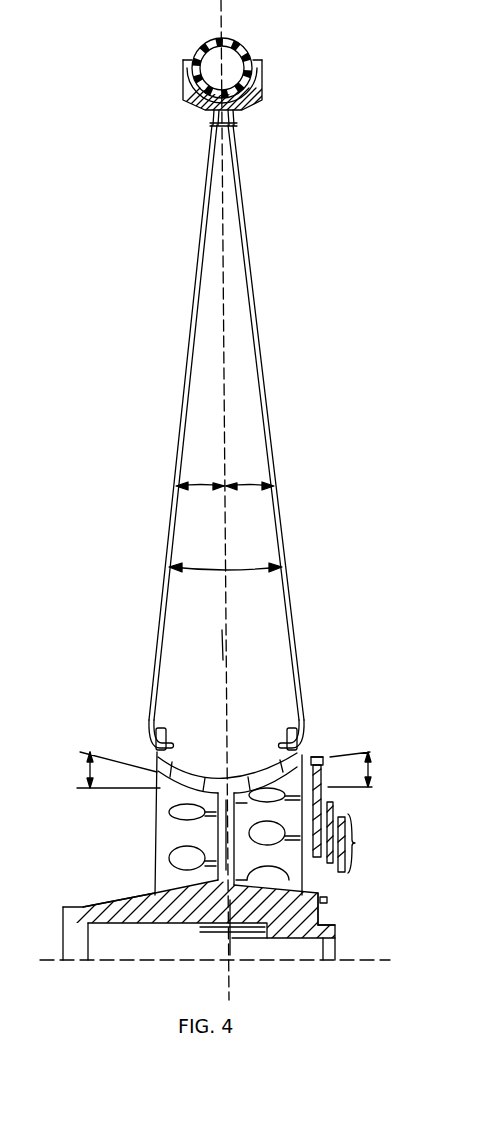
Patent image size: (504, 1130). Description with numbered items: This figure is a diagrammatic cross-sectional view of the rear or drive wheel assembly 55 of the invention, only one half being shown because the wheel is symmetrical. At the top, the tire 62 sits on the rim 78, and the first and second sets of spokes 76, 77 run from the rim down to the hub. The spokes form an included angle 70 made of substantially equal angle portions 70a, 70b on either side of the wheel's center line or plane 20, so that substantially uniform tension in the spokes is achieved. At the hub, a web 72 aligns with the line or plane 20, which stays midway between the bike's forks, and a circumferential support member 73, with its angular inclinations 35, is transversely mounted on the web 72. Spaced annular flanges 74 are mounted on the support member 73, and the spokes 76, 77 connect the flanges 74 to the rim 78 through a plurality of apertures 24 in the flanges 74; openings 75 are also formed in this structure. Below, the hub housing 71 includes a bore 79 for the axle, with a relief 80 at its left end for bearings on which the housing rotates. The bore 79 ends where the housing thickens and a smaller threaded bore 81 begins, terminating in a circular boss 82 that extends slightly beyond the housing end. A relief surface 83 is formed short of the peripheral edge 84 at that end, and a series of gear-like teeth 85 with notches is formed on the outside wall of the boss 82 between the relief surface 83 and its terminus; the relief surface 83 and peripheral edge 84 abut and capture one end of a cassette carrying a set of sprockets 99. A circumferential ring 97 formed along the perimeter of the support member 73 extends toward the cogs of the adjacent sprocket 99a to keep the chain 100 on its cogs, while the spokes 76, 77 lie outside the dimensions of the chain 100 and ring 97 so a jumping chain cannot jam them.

The tire 62 is at (250, 46).
The rim 78 is at (265, 80).
The rear wheel assembly 55 is at (146, 276).
The first set of spokes 76 is at (160, 618).
The second set of spokes 77 is at (308, 612).
The angle portion 70a is at (202, 490).
The angle portion 70b is at (253, 490).
The included angle 70 is at (240, 570).
The center line or plane 20 is at (226, 648).
The annular flanges 74 is at (163, 738).
The apertures 24 is at (168, 733).
The circumferential support member 73 is at (227, 775).
The web 72 is at (236, 835).
The openings 75 is at (277, 768).
The circumferential ring 97 is at (316, 755).
The chain 100 is at (325, 758).
The adjacent sprocket 99a is at (334, 795).
The set of sprockets 99 is at (361, 843).
The angular inclinations 35 is at (88, 770).
The bore 79 is at (135, 925).
The hub housing 71 is at (102, 904).
The relief 80 is at (73, 915).
The threaded bore 81 is at (292, 942).
The circular boss 82 is at (337, 930).
The gear-like teeth 85 is at (336, 925).
The relief surface 83 is at (328, 907).
The peripheral edge 84 is at (328, 897).